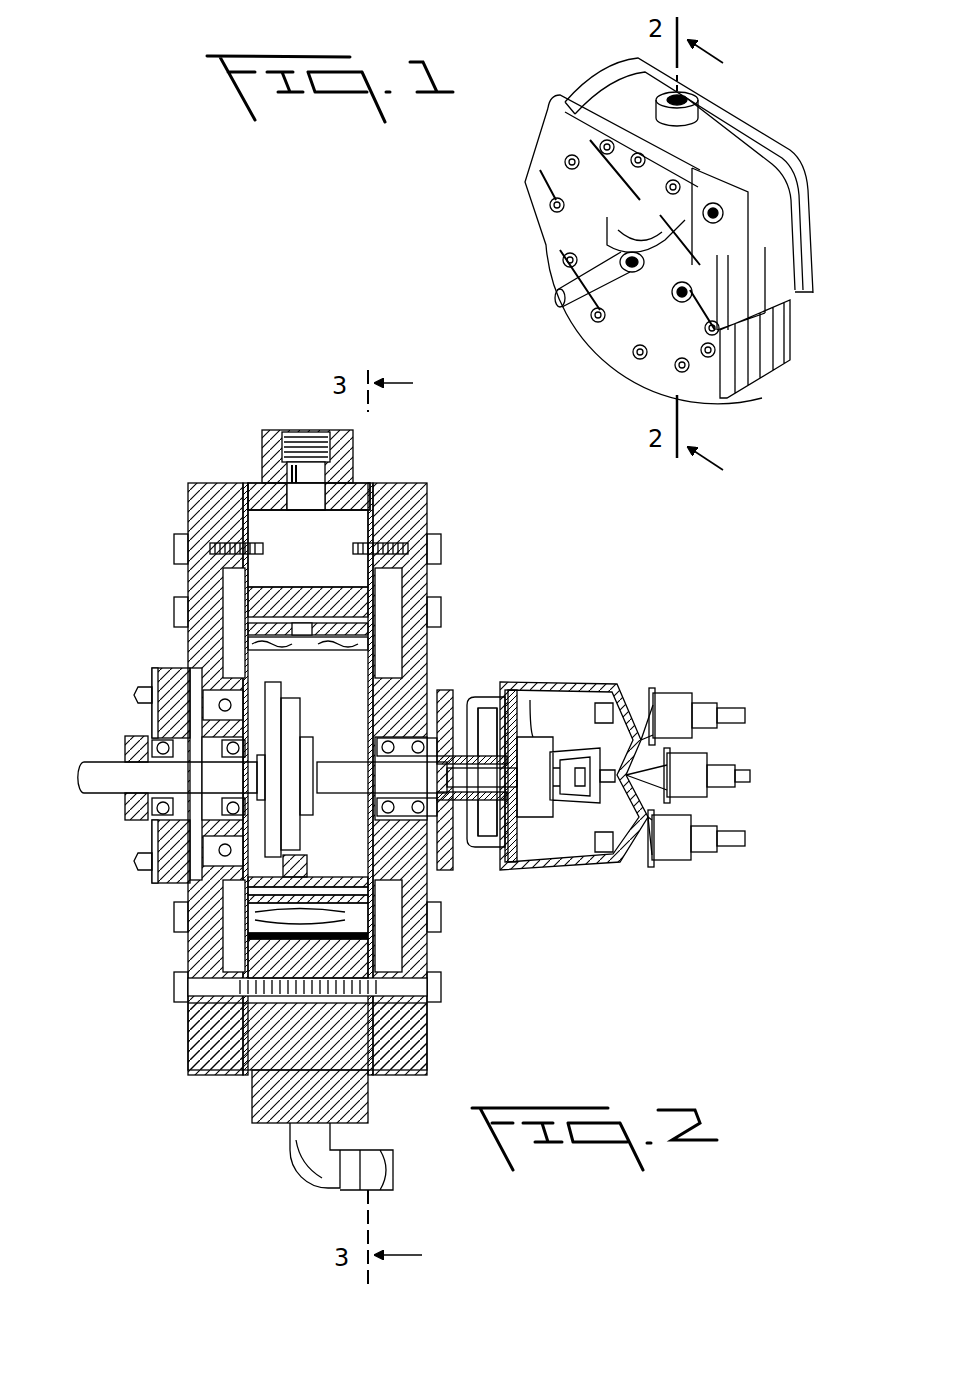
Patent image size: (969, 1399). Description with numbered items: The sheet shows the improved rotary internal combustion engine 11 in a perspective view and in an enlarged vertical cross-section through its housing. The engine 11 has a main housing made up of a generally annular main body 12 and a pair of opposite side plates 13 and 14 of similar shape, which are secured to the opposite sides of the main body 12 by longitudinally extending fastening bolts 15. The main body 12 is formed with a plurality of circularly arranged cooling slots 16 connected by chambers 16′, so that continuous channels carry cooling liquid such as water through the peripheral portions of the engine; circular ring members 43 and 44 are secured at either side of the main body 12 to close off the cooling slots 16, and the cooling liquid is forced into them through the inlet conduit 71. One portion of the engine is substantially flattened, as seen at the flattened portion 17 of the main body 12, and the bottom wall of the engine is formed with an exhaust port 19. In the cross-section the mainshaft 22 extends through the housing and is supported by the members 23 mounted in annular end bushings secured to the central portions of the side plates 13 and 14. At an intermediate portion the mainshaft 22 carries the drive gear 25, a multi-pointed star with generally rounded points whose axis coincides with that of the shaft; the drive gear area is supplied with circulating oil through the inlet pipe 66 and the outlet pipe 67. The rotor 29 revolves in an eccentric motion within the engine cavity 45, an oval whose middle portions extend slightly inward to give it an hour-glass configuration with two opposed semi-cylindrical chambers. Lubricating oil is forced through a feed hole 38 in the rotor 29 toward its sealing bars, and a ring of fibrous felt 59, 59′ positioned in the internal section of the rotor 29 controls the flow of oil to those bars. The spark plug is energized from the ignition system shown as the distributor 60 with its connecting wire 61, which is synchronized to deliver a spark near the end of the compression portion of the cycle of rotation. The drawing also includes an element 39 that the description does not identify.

In FIG. 1, the rotary combustion engine 11 is at (768, 115).
In FIG. 1, the main body 12 is at (783, 300).
In FIG. 1, the side plate 13 is at (535, 155).
In FIG. 2, the side plate 13 is at (188, 1043).
In FIG. 1, the side plate 14 is at (790, 140).
In FIG. 2, the side plate 14 is at (428, 1043).
In FIG. 1, the fastening bolts 15 is at (597, 322).
In FIG. 2, the cooling slots 16 is at (272, 533).
In FIG. 2, the chambers 16′ is at (388, 935).
In FIG. 1, the flattened portion 17 is at (610, 105).
In FIG. 2, the exhaust port 19 is at (377, 1153).
In FIG. 1, the mainshaft 22 is at (556, 298).
In FIG. 2, the mainshaft 22 is at (92, 762).
In FIG. 2, the mainshaft support 23 is at (150, 822).
In FIG. 2, the drive gear 25 is at (310, 715).
In FIG. 2, the rotor 29 is at (353, 890).
In FIG. 2, the feed hole 38 is at (322, 873).
In FIG. 2, the bearing housing 39 is at (385, 693).
In FIG. 2, the circular ring member 43 is at (258, 483).
In FIG. 2, the circular ring member 44 is at (373, 483).
In FIG. 2, the engine cavity 45 is at (340, 527).
In FIG. 2, the ring of fibrous felt 59 is at (220, 700).
In FIG. 2, the ring of fibrous felt 59′ is at (400, 662).
In FIG. 2, the ignition system 60 is at (642, 637).
In FIG. 2, the connecting wire 61 is at (752, 830).
In FIG. 2, the inlet pipe 66 is at (160, 677).
In FIG. 2, the outlet pipe 67 is at (170, 883).
In FIG. 1, the inlet conduit 71 is at (700, 95).
In FIG. 2, the inlet conduit 71 is at (300, 430).